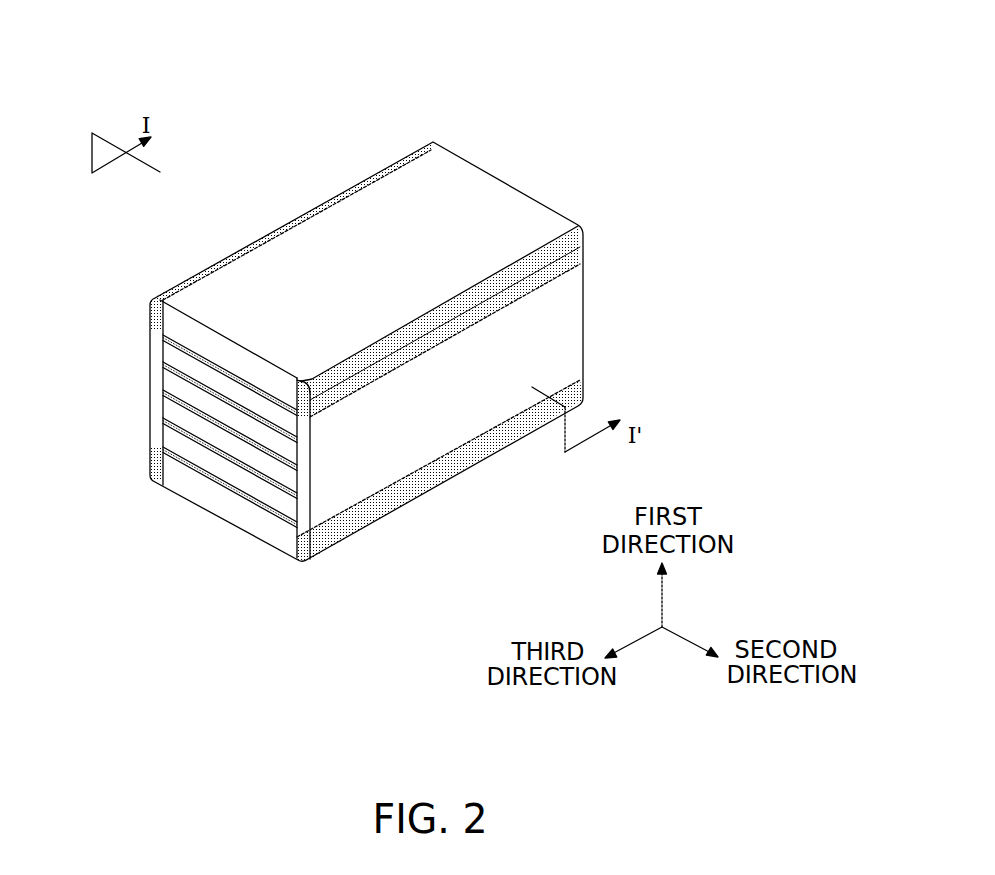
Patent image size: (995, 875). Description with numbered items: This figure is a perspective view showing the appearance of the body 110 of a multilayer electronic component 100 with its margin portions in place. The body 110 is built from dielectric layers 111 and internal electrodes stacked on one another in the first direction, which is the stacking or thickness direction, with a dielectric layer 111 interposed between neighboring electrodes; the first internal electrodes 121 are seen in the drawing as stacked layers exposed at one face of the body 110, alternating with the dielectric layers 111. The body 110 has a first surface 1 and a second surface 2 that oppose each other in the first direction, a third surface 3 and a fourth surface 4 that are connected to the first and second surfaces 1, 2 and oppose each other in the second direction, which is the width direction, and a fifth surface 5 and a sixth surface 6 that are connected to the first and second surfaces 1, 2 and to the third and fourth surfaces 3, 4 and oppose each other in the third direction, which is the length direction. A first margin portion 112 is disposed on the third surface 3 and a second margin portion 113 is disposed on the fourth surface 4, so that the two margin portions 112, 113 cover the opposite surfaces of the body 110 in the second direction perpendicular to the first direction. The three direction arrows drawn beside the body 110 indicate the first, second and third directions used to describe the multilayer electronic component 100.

The multilayer electronic component 100 is at (138, 31).
The first surface 1 is at (390, 205).
The second surface 2 is at (449, 435).
The third surface 3 is at (218, 300).
The fourth surface 4 is at (535, 350).
The fifth surface 5 is at (221, 444).
The sixth surface 6 is at (512, 215).
The body 110 is at (317, 245).
The dielectric layer 111 is at (163, 386).
The first margin portion 112 is at (250, 243).
The second margin portion 113 is at (387, 477).
The first internal electrode 121 is at (163, 376).